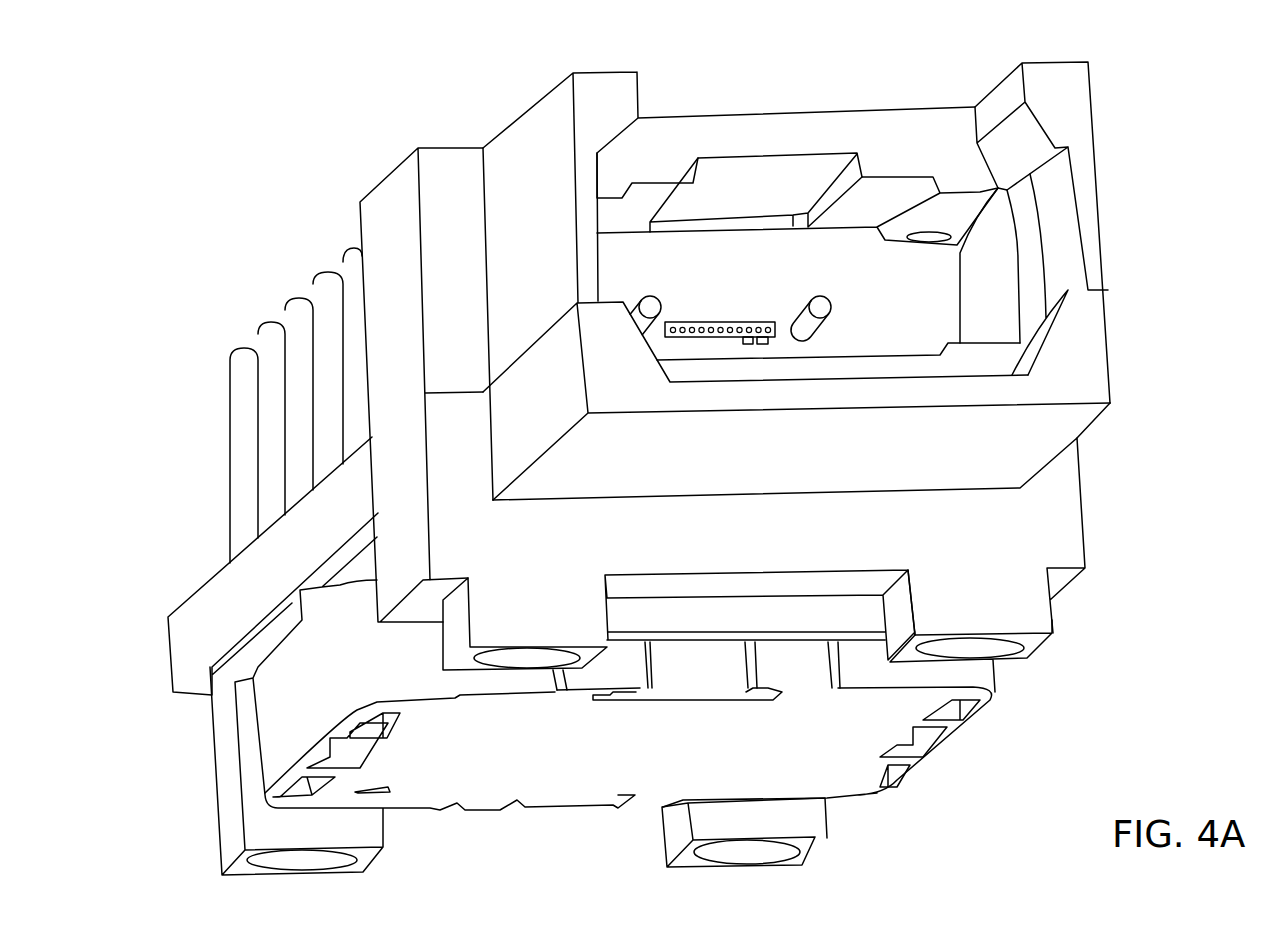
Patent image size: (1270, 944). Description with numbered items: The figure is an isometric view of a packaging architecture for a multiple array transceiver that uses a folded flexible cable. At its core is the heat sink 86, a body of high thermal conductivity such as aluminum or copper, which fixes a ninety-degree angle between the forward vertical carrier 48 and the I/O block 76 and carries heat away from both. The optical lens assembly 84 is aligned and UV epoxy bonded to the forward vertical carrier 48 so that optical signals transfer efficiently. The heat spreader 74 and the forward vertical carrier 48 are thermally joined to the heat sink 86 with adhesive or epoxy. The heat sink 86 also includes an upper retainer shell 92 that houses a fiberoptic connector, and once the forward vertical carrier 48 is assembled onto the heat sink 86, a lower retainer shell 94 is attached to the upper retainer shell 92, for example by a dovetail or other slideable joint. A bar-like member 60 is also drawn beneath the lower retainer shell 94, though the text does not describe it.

The forward vertical carrier 48 is at (927, 345).
The bar 60 is at (647, 630).
The heat spreader 74 is at (190, 692).
The I/O block 76 is at (481, 784).
The optical lens assembly 84 is at (790, 305).
The heat sink 86 is at (440, 165).
The upper retainer shell 92 is at (1060, 102).
The lower retainer shell 94 is at (1022, 533).